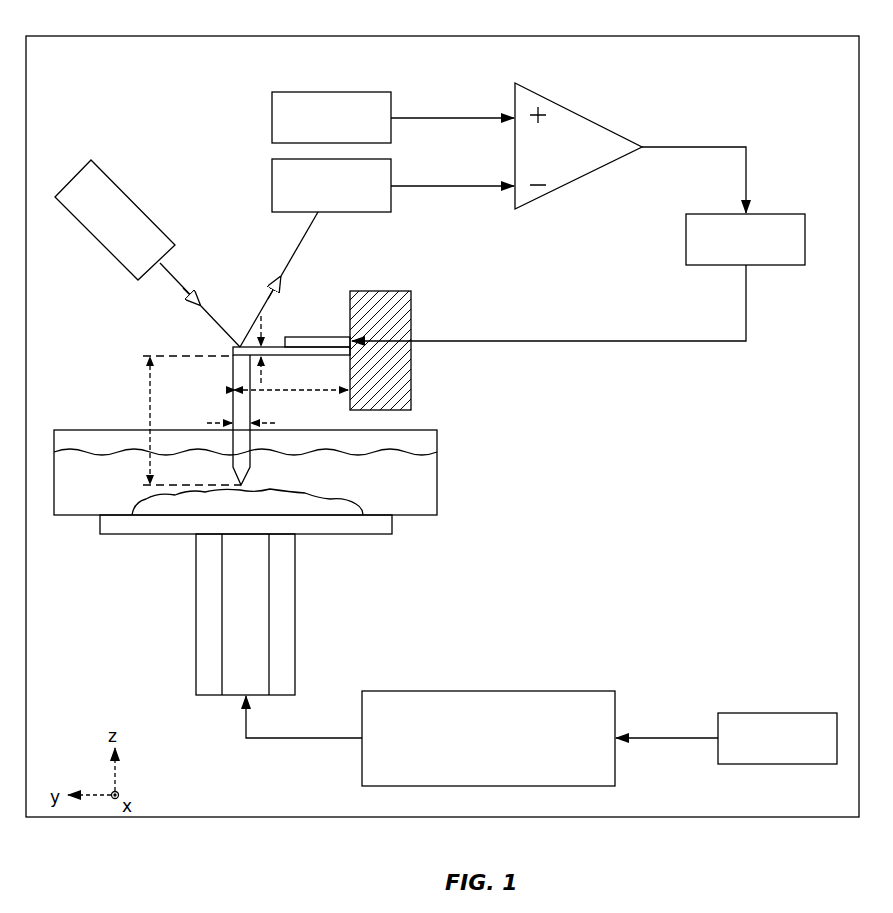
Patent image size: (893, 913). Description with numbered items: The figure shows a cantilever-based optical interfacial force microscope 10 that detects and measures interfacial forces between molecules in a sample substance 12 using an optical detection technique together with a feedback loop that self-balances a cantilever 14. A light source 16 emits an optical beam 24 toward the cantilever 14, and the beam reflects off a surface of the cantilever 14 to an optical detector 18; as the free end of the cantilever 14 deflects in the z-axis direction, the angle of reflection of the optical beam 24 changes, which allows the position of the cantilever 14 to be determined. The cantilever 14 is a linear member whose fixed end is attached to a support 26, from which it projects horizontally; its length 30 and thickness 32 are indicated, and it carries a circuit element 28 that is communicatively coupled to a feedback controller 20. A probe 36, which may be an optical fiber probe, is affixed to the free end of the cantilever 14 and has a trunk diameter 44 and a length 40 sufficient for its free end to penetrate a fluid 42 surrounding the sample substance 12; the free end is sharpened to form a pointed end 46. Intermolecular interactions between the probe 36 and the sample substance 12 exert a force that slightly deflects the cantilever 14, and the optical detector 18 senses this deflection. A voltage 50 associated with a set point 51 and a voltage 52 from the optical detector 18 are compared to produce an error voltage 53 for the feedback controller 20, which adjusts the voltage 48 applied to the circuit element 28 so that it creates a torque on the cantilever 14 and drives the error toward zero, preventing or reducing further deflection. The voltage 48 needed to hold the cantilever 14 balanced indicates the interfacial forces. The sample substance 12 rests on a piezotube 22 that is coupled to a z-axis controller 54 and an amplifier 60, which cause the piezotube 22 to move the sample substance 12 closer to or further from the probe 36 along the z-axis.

The cantilever-based optical interfacial force microscope 10 is at (790, 36).
The sample substance 12 is at (310, 508).
The cantilever 14 is at (273, 345).
The light source 16 is at (115, 220).
The optical detector 18 is at (331, 185).
The feedback controller 20 is at (745, 239).
The piezotube 22 is at (297, 640).
The optical beam 24 is at (171, 276).
The support 26 is at (400, 290).
The circuit element 28 is at (313, 337).
The length 30 is at (290, 393).
The thickness 32 is at (262, 378).
The probe 36 is at (238, 405).
The length 40 is at (150, 393).
The fluid 42 is at (428, 486).
The trunk diameter 44 is at (230, 422).
The pointed end 46 is at (249, 484).
The voltage 48 is at (556, 341).
The voltage 50 is at (432, 118).
The set point 51 is at (331, 117).
The voltage 52 is at (432, 186).
The zero error voltage 53 is at (694, 147).
The z-axis controller 54 is at (726, 738).
The amplifier 60 is at (488, 738).